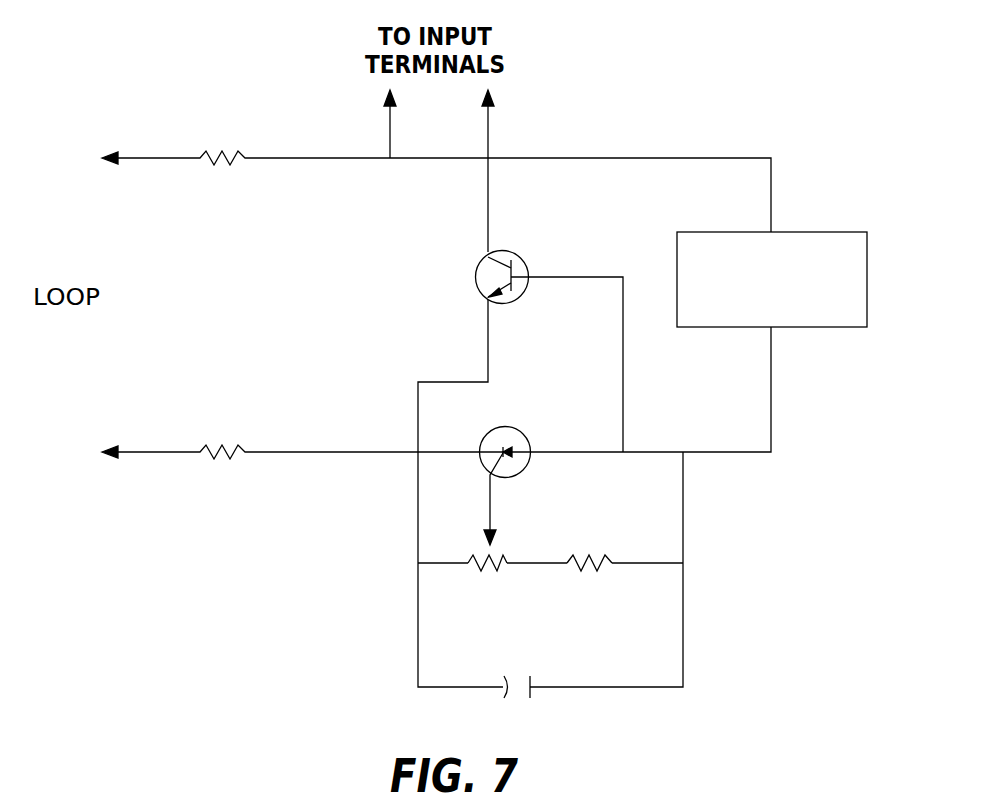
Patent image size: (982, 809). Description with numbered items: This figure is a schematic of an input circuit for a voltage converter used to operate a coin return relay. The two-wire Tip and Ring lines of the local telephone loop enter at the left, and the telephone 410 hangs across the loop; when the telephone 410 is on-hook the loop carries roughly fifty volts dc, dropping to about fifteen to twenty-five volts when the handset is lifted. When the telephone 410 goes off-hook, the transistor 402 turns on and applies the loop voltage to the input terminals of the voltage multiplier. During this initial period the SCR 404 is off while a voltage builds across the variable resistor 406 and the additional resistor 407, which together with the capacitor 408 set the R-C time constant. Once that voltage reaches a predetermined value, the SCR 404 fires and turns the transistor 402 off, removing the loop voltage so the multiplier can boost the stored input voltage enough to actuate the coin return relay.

The transistor 402 is at (524, 260).
The silicon controlled rectifier (SCR) 404 is at (526, 435).
The variable resistor 406 is at (507, 573).
The additional resistor 407 is at (607, 573).
The capacitor 408 is at (533, 692).
The telephone 410 is at (836, 232).